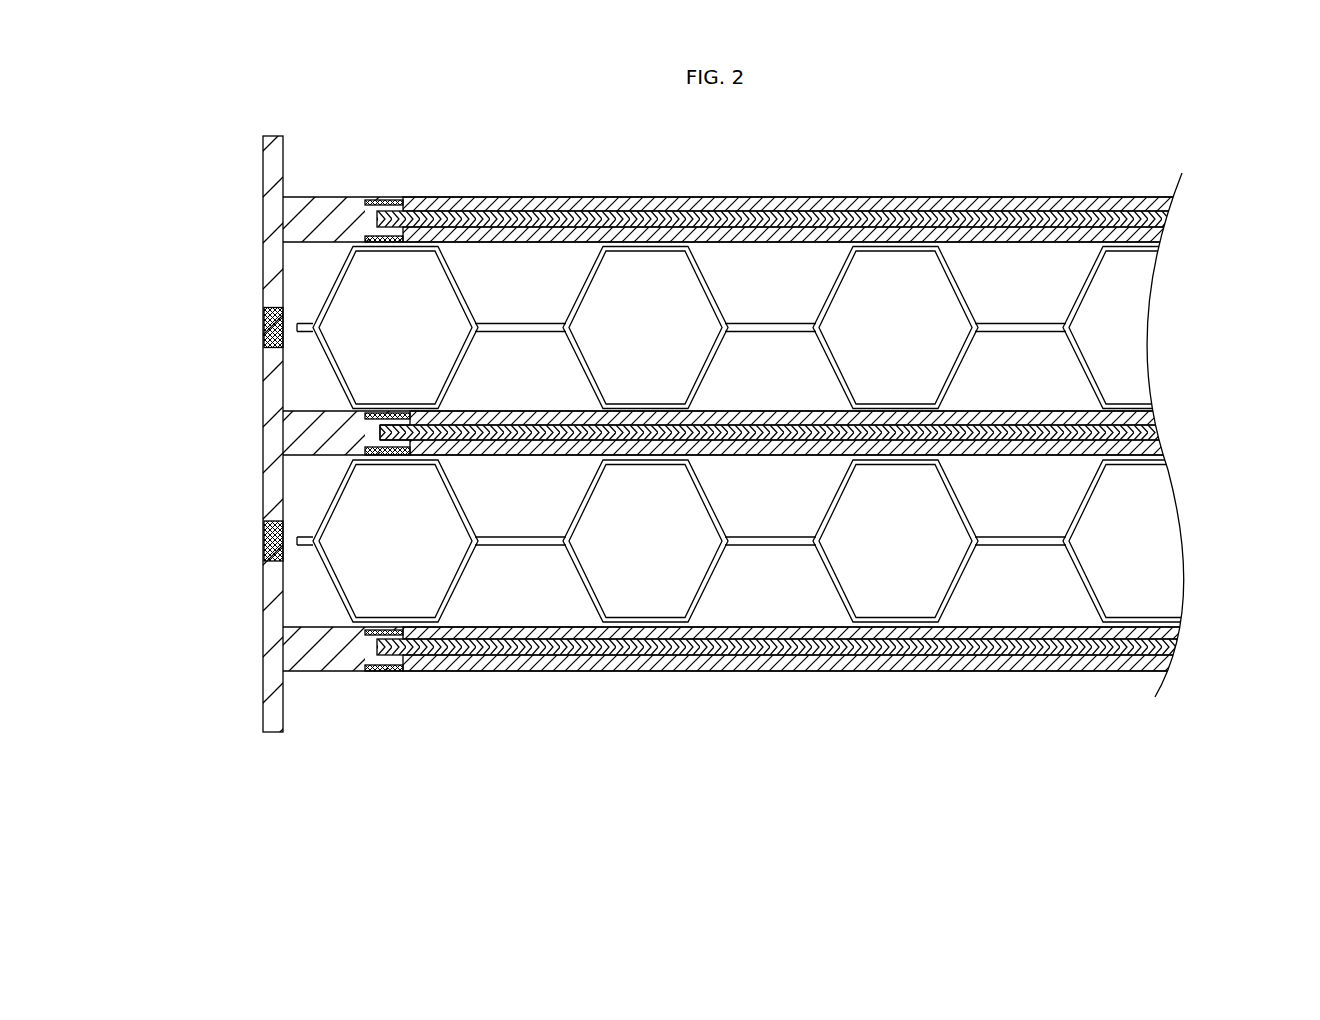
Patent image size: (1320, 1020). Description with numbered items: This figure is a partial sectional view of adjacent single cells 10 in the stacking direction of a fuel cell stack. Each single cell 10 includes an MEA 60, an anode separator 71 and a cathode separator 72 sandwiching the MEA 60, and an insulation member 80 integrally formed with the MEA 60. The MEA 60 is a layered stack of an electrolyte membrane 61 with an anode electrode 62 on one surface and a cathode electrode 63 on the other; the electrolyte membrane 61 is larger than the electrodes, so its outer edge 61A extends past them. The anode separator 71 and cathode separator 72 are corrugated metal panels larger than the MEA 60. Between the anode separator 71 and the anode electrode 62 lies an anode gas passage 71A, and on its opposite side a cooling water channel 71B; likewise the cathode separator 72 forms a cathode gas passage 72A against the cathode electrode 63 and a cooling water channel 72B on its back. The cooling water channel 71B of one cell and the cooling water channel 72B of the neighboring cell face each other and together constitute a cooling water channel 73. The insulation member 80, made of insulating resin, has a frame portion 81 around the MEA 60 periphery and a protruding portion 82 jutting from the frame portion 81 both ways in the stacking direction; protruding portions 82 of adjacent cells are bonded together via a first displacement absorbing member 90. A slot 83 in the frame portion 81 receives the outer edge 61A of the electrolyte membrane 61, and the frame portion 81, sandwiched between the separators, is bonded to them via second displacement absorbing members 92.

The single cell 10 is at (241, 207).
The MEA 60 is at (1229, 390).
The electrolyte membrane 61 is at (1160, 437).
The outer edge 61A is at (385, 467).
The anode electrode 62 is at (1160, 417).
The cathode electrode 63 is at (1160, 448).
The anode separator 71 is at (1093, 350).
The anode gas passage 71A is at (1021, 372).
The cooling water channel 71B is at (902, 380).
The cathode separator 72 is at (1095, 276).
The cathode gas passage 72A is at (1021, 495).
The cooling water channel 72B is at (880, 272).
The cooling water channel 73 is at (838, 133).
The insulation member 80 is at (214, 380).
The frame portion 81 is at (315, 436).
The protruding portion 82 is at (270, 376).
The slot 83 is at (410, 461).
The first displacement absorbing member 90 is at (264, 318).
The second displacement absorbing member 92 is at (386, 417).